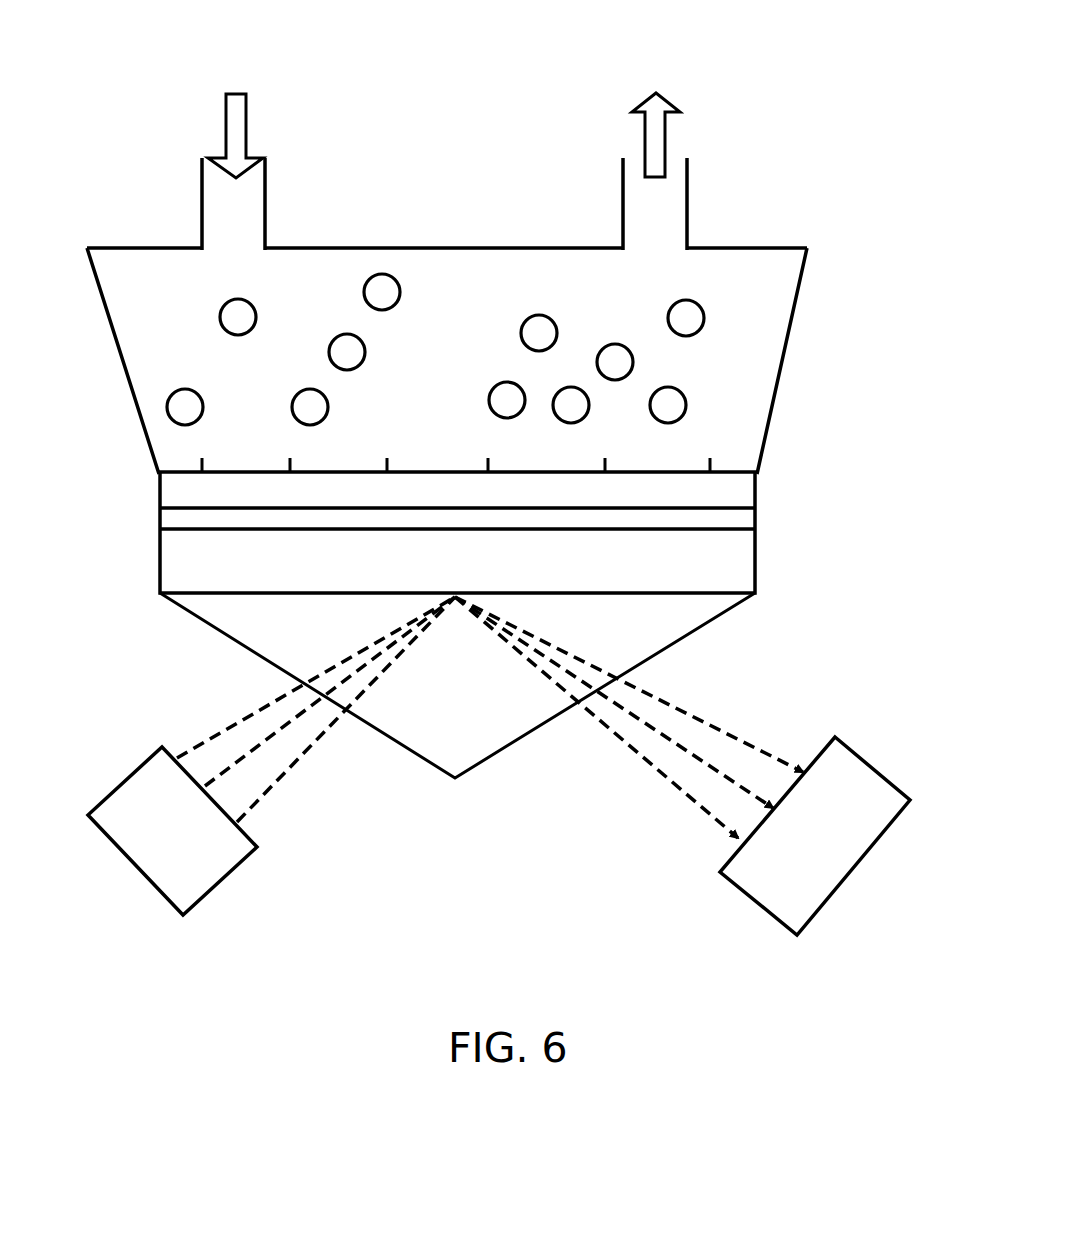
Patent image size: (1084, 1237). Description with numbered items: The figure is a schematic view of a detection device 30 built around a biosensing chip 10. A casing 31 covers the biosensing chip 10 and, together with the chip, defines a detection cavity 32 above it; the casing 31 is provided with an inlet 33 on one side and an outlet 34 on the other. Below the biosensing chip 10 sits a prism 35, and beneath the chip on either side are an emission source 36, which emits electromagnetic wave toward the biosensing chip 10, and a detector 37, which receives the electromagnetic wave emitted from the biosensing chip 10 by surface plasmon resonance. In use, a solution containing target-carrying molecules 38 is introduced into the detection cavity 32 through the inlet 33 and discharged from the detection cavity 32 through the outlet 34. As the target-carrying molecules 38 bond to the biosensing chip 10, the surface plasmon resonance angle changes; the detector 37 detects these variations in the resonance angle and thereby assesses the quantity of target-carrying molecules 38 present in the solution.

The detection device 30 is at (78, 100).
The casing 31 is at (800, 282).
The detection cavity 32 is at (155, 352).
The inlet 33 is at (238, 205).
The outlet 34 is at (667, 207).
The target-carrying molecules 38 is at (507, 376).
The biosensing chip 10 is at (757, 529).
The prism 35 is at (463, 743).
The emission source 36 is at (270, 823).
The detector 37 is at (850, 837).